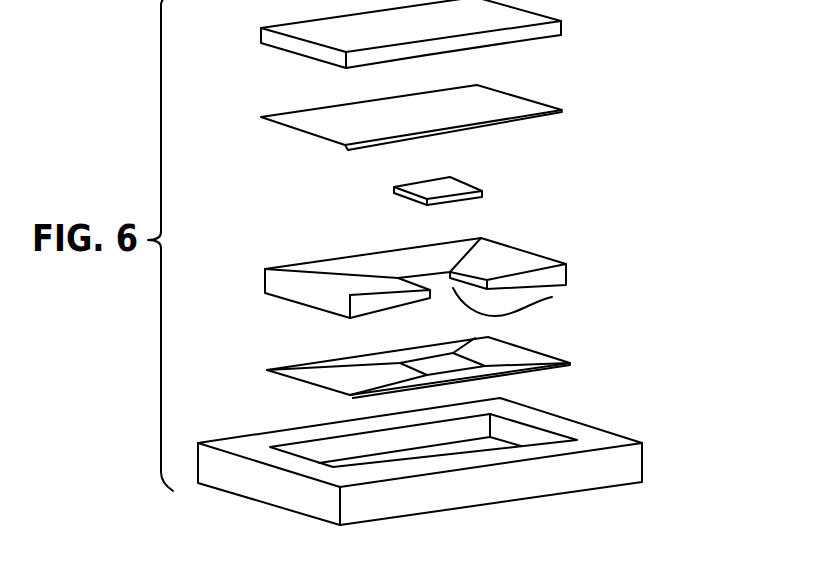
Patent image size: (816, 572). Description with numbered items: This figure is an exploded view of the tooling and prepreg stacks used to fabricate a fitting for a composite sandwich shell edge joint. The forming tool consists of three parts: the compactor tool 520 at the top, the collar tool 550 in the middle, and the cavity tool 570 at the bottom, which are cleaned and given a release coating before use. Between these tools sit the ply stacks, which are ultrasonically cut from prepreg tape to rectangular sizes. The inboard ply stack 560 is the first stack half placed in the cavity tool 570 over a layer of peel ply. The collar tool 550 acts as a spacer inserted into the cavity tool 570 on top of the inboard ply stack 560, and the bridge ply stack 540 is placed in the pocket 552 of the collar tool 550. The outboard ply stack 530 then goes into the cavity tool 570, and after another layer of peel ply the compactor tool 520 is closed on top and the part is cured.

The compactor tool 520 is at (563, 25).
The outboard ply stack 530 is at (518, 95).
The bridge ply stack 540 is at (483, 192).
The collar tool 550 is at (567, 272).
The pocket 552 is at (552, 297).
The inboard ply stack 560 is at (552, 353).
The cavity tool 570 is at (643, 459).